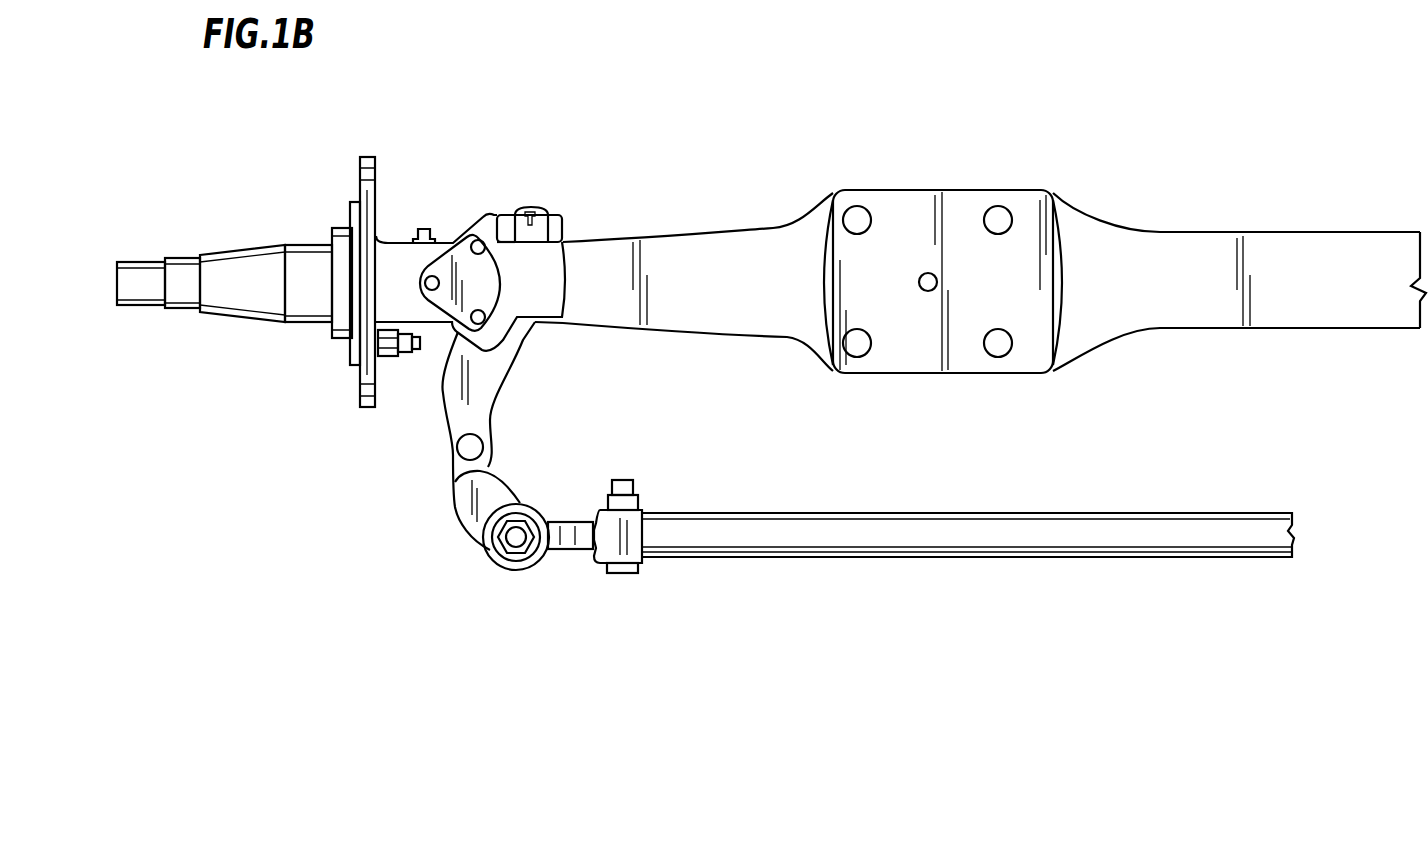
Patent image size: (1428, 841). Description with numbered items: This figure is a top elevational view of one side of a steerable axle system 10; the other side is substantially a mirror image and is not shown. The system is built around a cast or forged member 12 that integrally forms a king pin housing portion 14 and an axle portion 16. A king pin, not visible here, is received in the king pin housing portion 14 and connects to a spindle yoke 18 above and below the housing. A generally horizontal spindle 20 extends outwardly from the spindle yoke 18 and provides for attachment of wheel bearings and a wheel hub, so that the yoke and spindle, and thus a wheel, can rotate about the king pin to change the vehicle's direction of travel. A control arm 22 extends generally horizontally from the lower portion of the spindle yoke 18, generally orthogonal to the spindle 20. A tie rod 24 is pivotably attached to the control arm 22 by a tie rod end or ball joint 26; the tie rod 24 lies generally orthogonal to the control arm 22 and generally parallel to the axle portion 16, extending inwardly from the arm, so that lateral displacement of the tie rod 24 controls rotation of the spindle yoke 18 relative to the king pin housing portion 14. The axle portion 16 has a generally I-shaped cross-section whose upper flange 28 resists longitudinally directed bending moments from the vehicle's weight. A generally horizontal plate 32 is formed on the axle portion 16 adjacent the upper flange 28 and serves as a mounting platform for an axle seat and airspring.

The steerable axle system 10 is at (1233, 153).
The cast or forged member 12 is at (1122, 343).
The king pin housing portion 14 is at (562, 322).
The axle portion 16 is at (1280, 330).
The spindle yoke 18 is at (397, 240).
The spindle 20 is at (247, 321).
The control arm 22 is at (490, 421).
The tie rod 24 is at (975, 557).
The tie rod end or ball joint 26 is at (502, 557).
The upper flange 28 is at (1345, 230).
The plate 32 is at (950, 188).